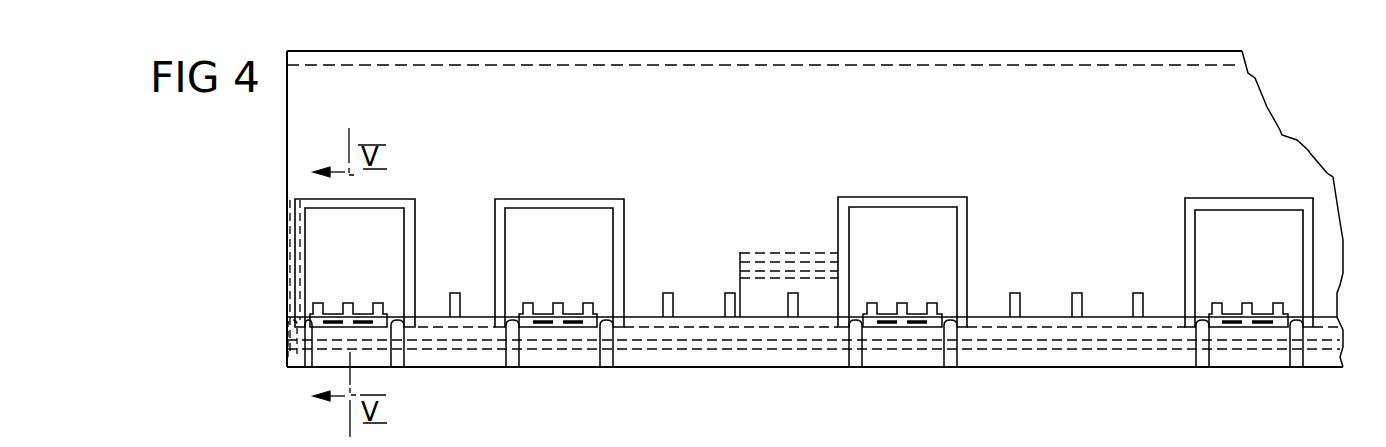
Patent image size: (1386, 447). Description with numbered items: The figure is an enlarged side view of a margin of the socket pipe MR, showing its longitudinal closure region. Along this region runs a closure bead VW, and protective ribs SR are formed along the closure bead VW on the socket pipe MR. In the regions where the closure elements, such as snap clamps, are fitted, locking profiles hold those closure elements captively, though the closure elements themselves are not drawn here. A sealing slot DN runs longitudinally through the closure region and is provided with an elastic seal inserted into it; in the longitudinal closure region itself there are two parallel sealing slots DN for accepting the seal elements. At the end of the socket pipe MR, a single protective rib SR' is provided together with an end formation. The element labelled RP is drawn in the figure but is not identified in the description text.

The socket pipe MR is at (312, 140).
The protective ribs SR is at (1075, 268).
The single protective rib SR' is at (248, 278).
The closure bead VW is at (427, 357).
The sealing slot DN is at (485, 343).
The rest plate RP is at (888, 303).